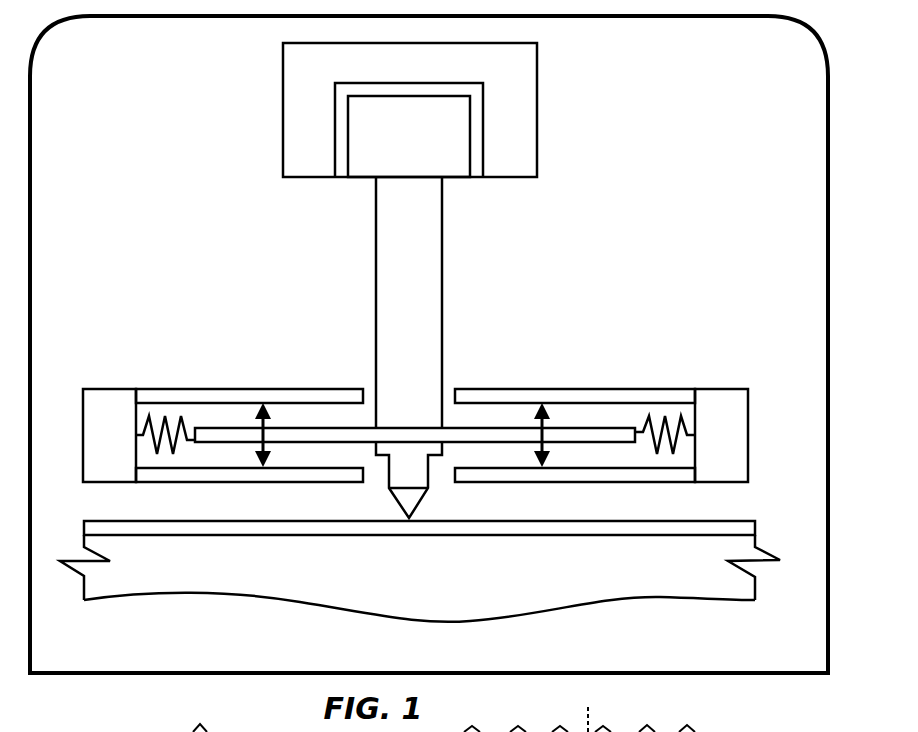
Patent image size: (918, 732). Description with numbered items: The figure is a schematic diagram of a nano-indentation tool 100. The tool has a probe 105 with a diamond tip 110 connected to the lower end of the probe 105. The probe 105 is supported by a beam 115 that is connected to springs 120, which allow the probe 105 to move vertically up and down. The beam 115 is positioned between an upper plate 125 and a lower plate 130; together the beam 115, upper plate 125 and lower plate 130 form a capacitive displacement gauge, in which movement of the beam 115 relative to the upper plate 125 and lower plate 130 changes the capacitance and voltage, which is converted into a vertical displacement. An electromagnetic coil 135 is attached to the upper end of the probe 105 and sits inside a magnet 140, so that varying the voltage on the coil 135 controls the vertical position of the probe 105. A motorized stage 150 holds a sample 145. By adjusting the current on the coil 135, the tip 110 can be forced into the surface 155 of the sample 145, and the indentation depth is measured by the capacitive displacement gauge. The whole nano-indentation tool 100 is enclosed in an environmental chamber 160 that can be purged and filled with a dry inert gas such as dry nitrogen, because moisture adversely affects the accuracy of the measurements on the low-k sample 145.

The nano-indentation tool 100 is at (662, 99).
The probe 105 is at (417, 267).
The diamond tip 110 is at (417, 500).
The beam 115 is at (330, 435).
The springs 120 is at (164, 413).
The upper plate 125 is at (210, 392).
The lower plate 130 is at (588, 475).
The electromagnetic coil 135 is at (417, 144).
The magnet 140 is at (526, 158).
The sample 145 is at (223, 528).
The motorized stage 150 is at (684, 578).
The surface 155 is at (742, 520).
The environmental chamber 160 is at (30, 204).